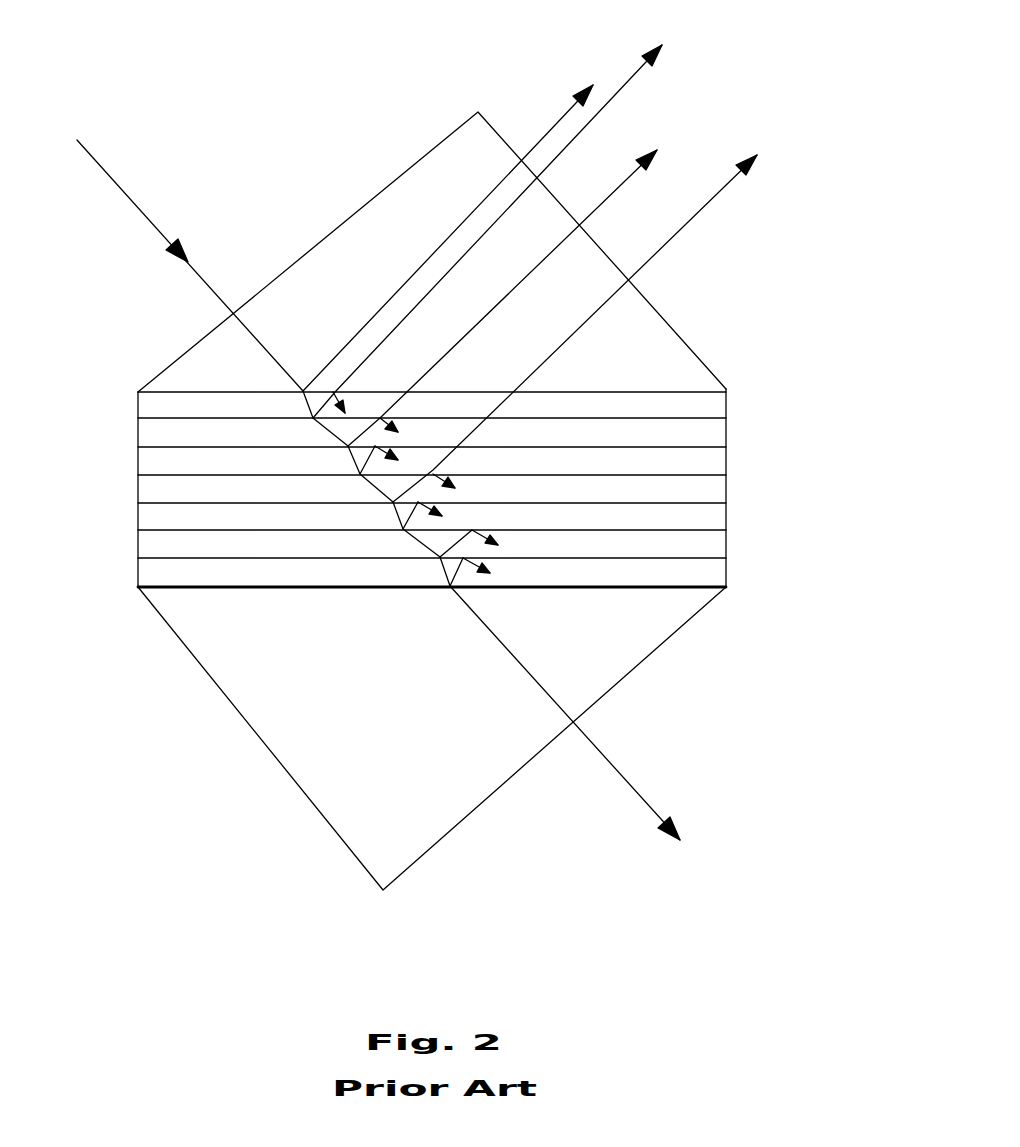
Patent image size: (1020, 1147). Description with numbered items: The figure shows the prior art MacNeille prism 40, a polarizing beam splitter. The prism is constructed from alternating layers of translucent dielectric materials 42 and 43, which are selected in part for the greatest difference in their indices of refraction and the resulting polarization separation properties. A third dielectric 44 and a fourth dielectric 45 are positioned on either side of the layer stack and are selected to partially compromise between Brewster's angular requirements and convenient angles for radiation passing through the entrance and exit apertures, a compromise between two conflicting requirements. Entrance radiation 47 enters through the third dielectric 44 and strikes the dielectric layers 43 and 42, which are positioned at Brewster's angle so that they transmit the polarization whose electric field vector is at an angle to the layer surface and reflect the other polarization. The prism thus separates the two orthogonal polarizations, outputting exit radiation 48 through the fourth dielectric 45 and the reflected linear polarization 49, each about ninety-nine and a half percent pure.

The MacNeille prism 40 is at (449, 501).
The translucent dielectric material layer 42 is at (153, 437).
The translucent dielectric material layer 43 is at (153, 408).
The third dielectric 44 is at (336, 218).
The fourth dielectric 45 is at (660, 656).
The entrance radiation 47 is at (150, 227).
The exit radiation 48 is at (637, 798).
The orthogonal linear polarization output 49 is at (565, 107).